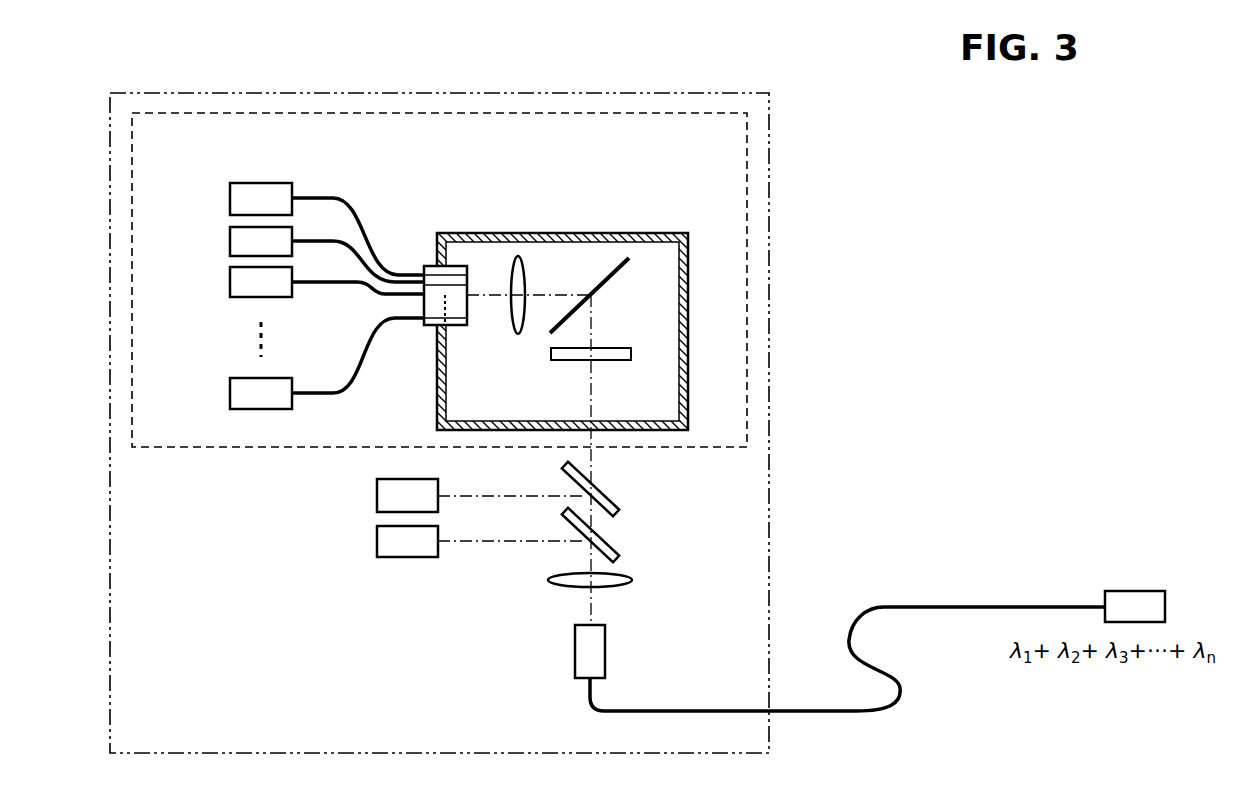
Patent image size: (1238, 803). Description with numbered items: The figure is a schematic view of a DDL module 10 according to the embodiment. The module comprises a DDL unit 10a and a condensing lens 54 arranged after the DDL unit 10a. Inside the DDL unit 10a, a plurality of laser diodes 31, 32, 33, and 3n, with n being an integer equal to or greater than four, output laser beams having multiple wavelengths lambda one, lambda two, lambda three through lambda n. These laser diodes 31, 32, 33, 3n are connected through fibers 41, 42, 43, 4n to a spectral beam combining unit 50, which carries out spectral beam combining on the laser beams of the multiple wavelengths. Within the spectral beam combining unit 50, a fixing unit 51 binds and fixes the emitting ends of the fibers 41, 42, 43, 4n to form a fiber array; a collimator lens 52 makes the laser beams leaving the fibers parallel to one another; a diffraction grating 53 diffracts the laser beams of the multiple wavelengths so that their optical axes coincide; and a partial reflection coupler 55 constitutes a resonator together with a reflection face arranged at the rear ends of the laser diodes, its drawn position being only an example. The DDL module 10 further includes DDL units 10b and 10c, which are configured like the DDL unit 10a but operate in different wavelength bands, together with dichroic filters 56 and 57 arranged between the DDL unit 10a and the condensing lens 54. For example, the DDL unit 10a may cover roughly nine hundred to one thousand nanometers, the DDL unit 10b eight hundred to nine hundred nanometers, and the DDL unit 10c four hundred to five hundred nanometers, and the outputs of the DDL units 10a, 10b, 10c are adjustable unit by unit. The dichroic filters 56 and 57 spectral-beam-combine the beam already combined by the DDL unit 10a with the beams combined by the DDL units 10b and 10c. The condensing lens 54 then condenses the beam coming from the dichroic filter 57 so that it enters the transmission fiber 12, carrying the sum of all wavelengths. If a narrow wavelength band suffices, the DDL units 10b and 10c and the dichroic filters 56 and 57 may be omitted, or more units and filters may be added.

The DDL module 10 is at (575, 93).
The DDL unit 10a is at (705, 113).
The DDL unit 10b is at (377, 495).
The DDL unit 10c is at (377, 540).
The transmission fiber 12 is at (999, 607).
The laser diode 31 is at (259, 183).
The laser diode 32 is at (230, 227).
The laser diode 33 is at (230, 267).
The laser diode 3n is at (230, 378).
The fiber 41 is at (327, 198).
The fiber 42 is at (340, 228).
The fiber 43 is at (321, 283).
The fiber 4n is at (334, 393).
The spectral beam combining unit 50 is at (574, 233).
The fixing unit 51 is at (455, 266).
The collimator lens 52 is at (522, 257).
The diffraction grating 53 is at (613, 278).
The condensing lens 54 is at (632, 578).
The partial reflection coupler 55 is at (630, 353).
The dichroic filter 56 is at (614, 503).
The dichroic filter 57 is at (614, 551).